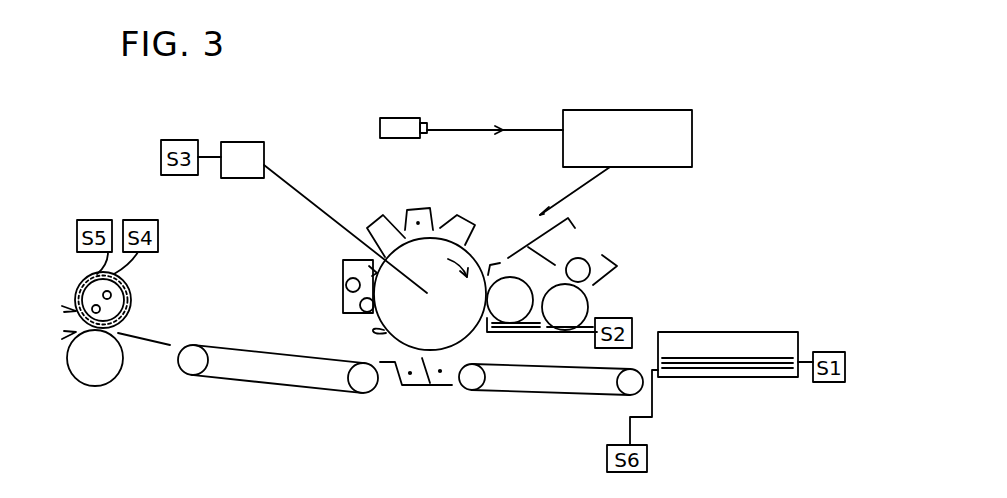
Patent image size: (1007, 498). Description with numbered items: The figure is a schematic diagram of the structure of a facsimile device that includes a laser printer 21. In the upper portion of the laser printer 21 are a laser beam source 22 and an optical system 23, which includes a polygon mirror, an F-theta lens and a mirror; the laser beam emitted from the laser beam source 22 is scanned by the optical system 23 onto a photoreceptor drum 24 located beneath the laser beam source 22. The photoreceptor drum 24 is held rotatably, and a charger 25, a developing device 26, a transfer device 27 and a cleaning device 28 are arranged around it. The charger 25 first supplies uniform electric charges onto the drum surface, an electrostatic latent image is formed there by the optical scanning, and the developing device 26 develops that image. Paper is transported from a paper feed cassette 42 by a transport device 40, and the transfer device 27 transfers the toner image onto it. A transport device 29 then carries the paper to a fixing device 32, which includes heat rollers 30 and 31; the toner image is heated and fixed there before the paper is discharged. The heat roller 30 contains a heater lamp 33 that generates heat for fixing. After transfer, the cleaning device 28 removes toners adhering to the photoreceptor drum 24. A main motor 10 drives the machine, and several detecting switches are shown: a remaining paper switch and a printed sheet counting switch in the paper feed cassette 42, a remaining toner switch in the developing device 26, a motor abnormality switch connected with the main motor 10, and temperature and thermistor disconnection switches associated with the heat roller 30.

The main motor 10 is at (260, 143).
The laser printer 21 is at (718, 165).
The laser beam source 22 is at (385, 116).
The optical system 23 is at (617, 110).
The photoreceptor drum 24 is at (477, 252).
The charger 25 is at (421, 208).
The developing device 26 is at (588, 292).
The transfer device 27 is at (442, 386).
The cleaning device 28 is at (342, 302).
The transport device 29 is at (288, 388).
The heat roller 30 is at (88, 276).
The heat roller 31 is at (78, 383).
The fixing device 32 is at (123, 322).
The heater lamp 33 is at (130, 310).
The transport device 40 is at (542, 392).
The paper feed cassette 42 is at (748, 378).